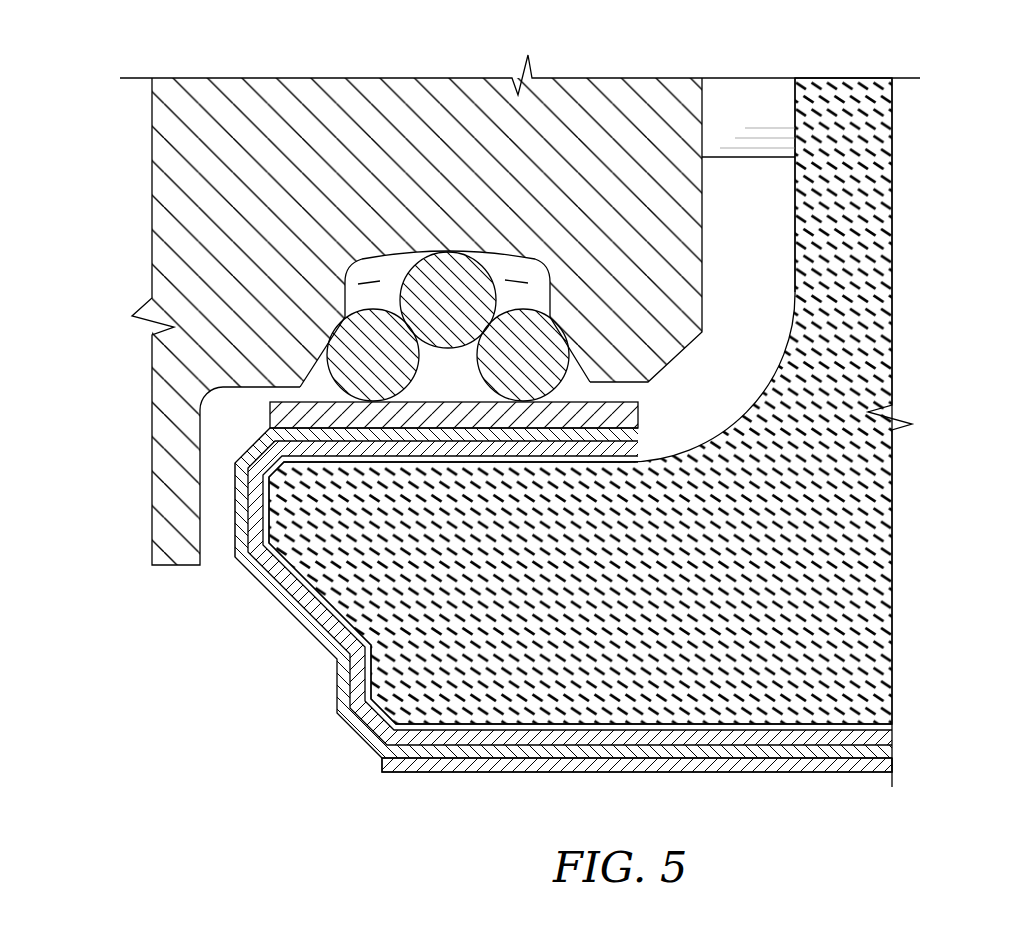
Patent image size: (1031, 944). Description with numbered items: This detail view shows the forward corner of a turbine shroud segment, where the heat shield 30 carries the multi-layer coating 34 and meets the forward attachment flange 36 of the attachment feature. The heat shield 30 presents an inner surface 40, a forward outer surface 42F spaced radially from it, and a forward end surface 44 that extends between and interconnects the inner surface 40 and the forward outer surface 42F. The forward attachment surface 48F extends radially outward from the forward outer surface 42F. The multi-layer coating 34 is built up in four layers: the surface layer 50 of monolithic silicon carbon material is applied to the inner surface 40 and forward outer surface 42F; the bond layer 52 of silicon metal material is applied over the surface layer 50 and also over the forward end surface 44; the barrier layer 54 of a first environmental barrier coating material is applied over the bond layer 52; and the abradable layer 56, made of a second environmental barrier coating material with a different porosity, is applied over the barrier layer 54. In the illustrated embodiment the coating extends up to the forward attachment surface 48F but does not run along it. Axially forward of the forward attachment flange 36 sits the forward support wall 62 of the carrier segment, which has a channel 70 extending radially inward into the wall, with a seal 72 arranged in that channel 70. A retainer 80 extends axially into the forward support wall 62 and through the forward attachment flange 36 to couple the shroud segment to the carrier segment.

The heat shield 30 is at (729, 698).
The multi-layer coating 34 is at (210, 654).
The forward attachment flange 36 is at (884, 139).
The inner surface 40 is at (792, 726).
The forward outer surface 42F is at (362, 463).
The forward end surface 44 is at (258, 503).
The forward attachment surface 48F is at (797, 230).
The surface layer 50 is at (556, 476).
The bond layer 52 is at (262, 574).
The barrier layer 54 is at (302, 632).
The abradable layer 56 is at (433, 440).
The forward support wall 62 is at (146, 146).
The channel 70 is at (452, 272).
The seal 72 is at (400, 270).
The retainer 80 is at (758, 104).